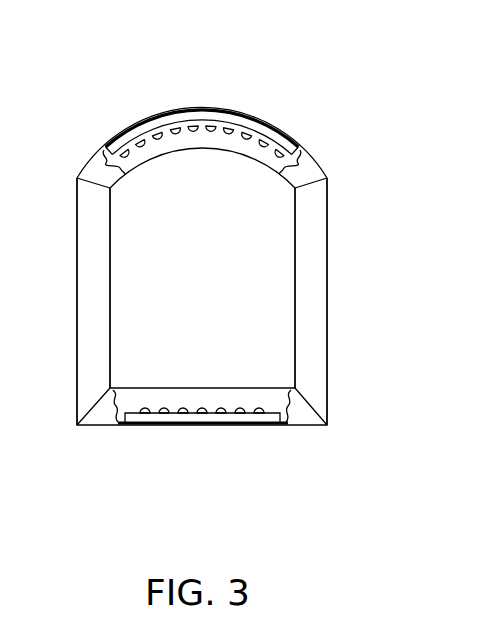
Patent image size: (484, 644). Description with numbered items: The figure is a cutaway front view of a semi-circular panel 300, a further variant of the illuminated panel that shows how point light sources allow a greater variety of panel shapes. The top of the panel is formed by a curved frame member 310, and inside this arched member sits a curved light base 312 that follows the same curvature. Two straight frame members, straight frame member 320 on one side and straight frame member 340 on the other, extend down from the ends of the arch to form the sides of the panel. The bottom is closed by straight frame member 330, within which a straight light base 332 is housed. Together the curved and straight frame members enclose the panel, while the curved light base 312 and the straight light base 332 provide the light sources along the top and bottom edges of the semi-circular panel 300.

The semi-circular panel 300 is at (128, 58).
The curved frame member 310 is at (318, 163).
The curved light base 312 is at (278, 152).
The straight frame member 320 is at (328, 282).
The straight frame member 330 is at (293, 425).
The straight light base 332 is at (265, 390).
The straight frame member 340 is at (77, 308).